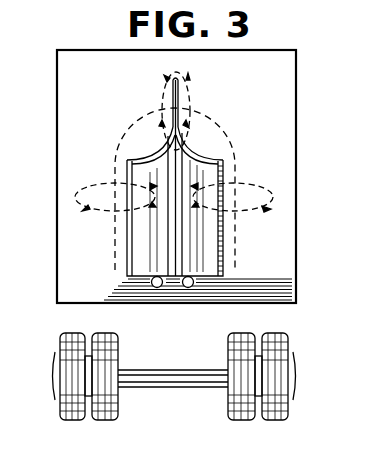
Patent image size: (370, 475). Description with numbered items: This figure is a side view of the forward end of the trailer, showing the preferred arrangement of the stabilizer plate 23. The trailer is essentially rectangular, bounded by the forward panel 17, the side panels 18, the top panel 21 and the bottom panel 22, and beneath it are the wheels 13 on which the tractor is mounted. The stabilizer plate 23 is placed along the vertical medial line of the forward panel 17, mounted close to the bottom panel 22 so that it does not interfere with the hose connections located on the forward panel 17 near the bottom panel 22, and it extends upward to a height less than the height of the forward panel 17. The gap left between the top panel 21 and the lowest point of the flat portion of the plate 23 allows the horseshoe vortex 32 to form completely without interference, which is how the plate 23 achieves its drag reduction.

The wheels 13 is at (72, 421).
The forward panel 17 is at (262, 82).
The side panels 18 is at (57, 133).
The top panel 21 is at (112, 50).
The bottom panel 22 is at (283, 305).
The stabilizer plate 23 is at (158, 248).
The horseshoe vortex 32 is at (233, 226).